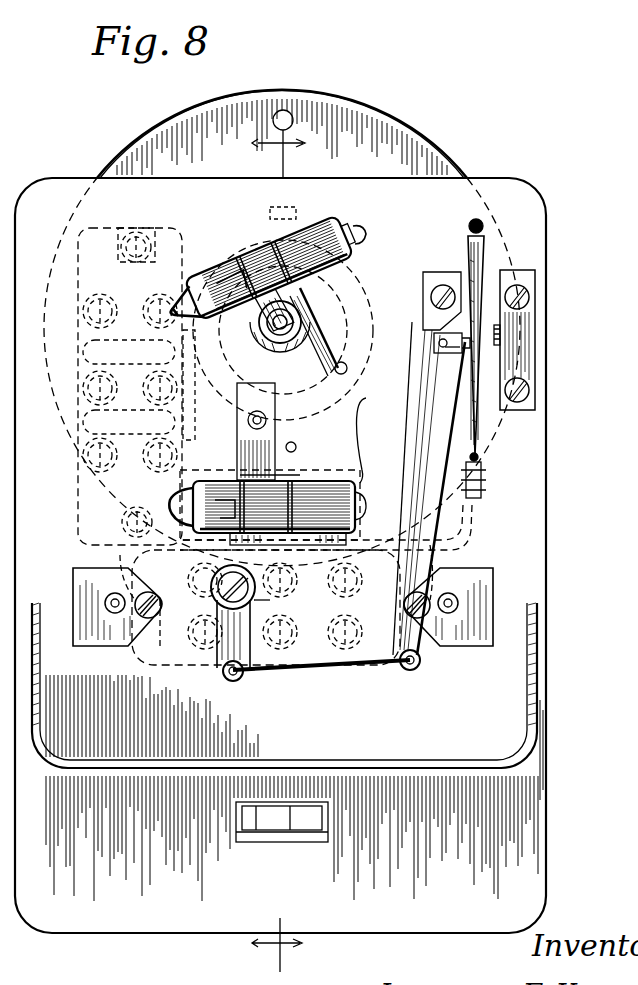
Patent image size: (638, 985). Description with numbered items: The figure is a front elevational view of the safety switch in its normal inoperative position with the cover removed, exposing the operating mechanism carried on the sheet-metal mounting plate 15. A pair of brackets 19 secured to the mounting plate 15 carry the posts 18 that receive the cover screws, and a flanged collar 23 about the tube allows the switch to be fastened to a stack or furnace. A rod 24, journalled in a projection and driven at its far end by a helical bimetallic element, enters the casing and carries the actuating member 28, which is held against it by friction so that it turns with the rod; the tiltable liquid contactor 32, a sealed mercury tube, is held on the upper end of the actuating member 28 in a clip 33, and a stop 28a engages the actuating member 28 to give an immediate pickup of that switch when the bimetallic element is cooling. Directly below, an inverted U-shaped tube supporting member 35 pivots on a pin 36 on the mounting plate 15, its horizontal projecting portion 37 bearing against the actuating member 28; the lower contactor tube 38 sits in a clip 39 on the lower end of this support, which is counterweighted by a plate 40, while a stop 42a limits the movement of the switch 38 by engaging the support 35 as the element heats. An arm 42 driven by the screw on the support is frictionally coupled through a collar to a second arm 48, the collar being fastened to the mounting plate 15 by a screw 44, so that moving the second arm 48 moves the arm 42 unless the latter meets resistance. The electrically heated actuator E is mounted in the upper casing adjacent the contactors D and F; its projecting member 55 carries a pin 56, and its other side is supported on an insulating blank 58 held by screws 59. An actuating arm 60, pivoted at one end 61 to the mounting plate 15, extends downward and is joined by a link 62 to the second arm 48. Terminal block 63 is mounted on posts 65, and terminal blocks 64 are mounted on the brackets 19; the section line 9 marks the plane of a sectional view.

The section line 9- 9 is at (282, 541).
The mounting plate 15 is at (547, 462).
The posts 18 is at (106, 603).
The brackets 19 is at (104, 640).
The flanged collar 23 is at (358, 140).
The rod 24 is at (265, 322).
The actuating member 28 is at (334, 332).
The stop 28a is at (348, 366).
The tiltable liquid contactor 32 is at (362, 250).
The clip 33 is at (258, 268).
The tube supporting member 35 is at (240, 490).
The pin 36 is at (270, 420).
The projecting portion 37 is at (270, 344).
The contactor tube 38 is at (418, 505).
The clip 39 is at (276, 478).
The plate 40 is at (352, 592).
The arm 42 is at (157, 577).
The stop 42a is at (297, 447).
The screw 44 is at (270, 601).
The second arm 48 is at (220, 660).
The projecting member 55 is at (440, 336).
The pin 56 is at (434, 343).
The insulating blank 58 is at (530, 340).
The screws 59 is at (529, 290).
The actuating arm 60 is at (482, 478).
The pivoted end 61 is at (437, 285).
The link 62 is at (372, 664).
The terminal block 63 is at (100, 236).
The terminal blocks 64 is at (164, 663).
The posts 65 is at (142, 236).
The contactor D is at (366, 400).
The electrically heated actuator E is at (485, 256).
The contactor F is at (358, 220).